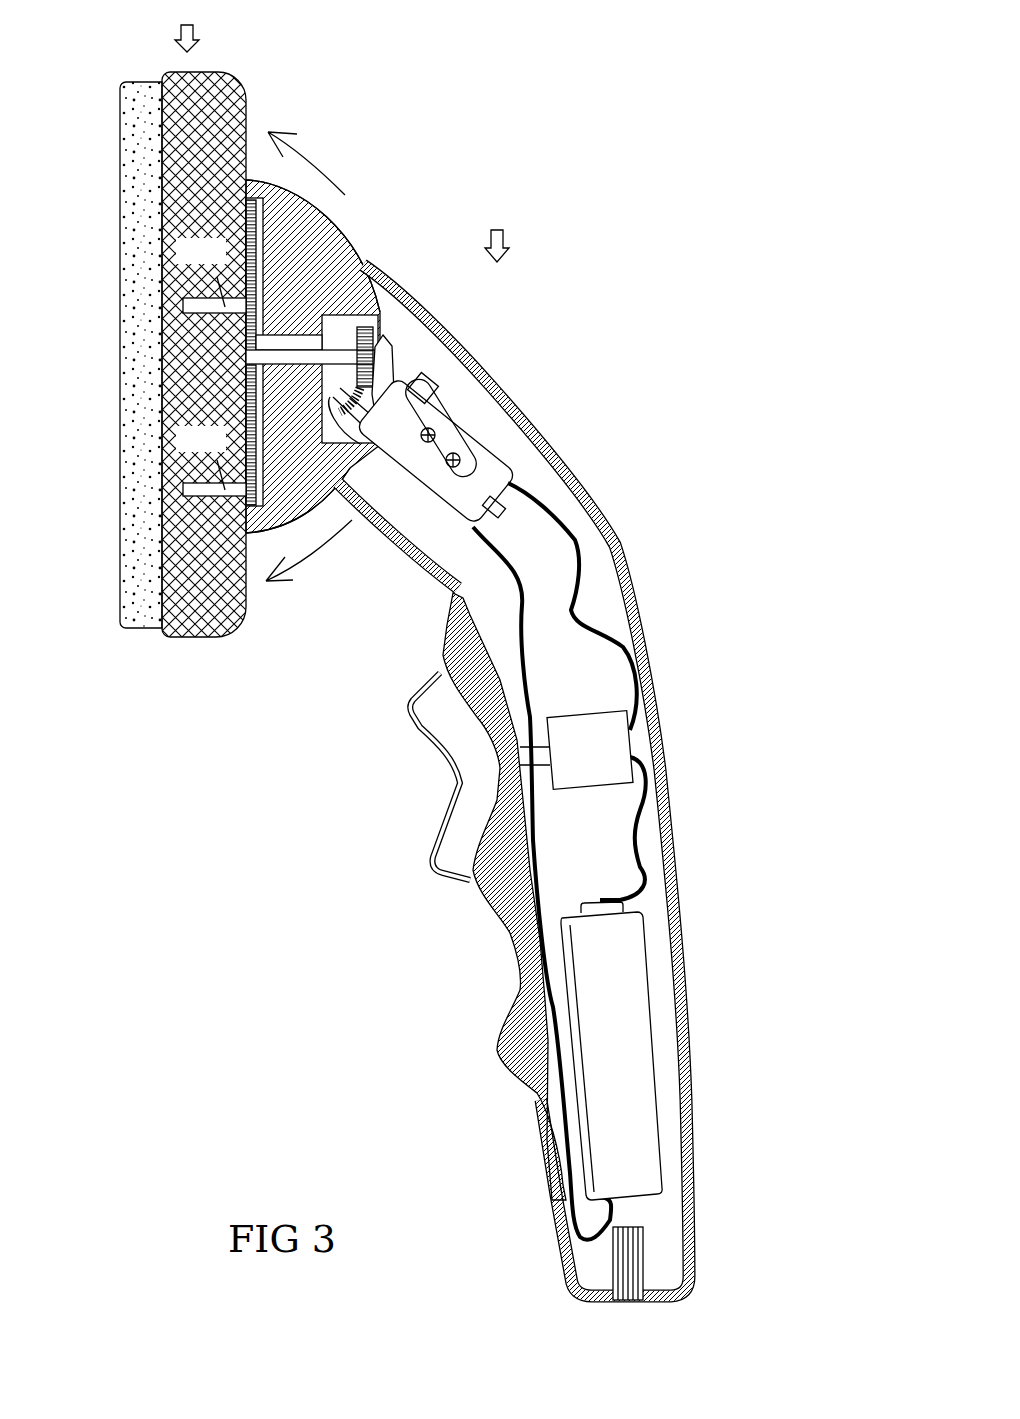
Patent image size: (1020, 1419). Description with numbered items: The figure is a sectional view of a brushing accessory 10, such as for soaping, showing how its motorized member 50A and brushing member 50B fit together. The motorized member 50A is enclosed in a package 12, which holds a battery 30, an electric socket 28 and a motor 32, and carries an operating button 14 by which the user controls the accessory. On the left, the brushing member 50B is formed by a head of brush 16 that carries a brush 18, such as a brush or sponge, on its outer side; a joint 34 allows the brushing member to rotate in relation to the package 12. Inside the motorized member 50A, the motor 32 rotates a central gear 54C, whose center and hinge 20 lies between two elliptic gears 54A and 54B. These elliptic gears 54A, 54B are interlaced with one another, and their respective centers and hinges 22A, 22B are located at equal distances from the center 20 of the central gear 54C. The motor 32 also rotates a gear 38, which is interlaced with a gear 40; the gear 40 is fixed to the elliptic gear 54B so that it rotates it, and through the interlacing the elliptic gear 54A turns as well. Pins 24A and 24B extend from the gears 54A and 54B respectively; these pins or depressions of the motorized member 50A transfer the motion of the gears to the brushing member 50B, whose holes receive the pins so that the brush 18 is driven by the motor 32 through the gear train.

The brushing accessory 10 is at (502, 736).
The package 12 is at (672, 835).
The operating button 14 is at (472, 775).
The head of brush 16 is at (224, 108).
The brush 18 is at (138, 358).
The center and hinge of gear 54C 20 is at (300, 350).
The center and hinge of gear 54A 22A is at (258, 258).
The center and hinge of gear 54B 22B is at (258, 445).
The pin of motorized member 24A is at (238, 272).
The pin of motorized member 24B is at (211, 461).
The electric socket 28 is at (630, 1268).
The battery 30 is at (625, 970).
The motor 32 is at (490, 468).
The joint 34 is at (340, 240).
The gear 38 is at (360, 444).
The gear 40 is at (386, 340).
The motorized member 50A is at (503, 231).
The brushing member 50B is at (189, 26).
The gear 54A is at (252, 220).
The gear 54B is at (298, 497).
The gear 54C is at (291, 404).